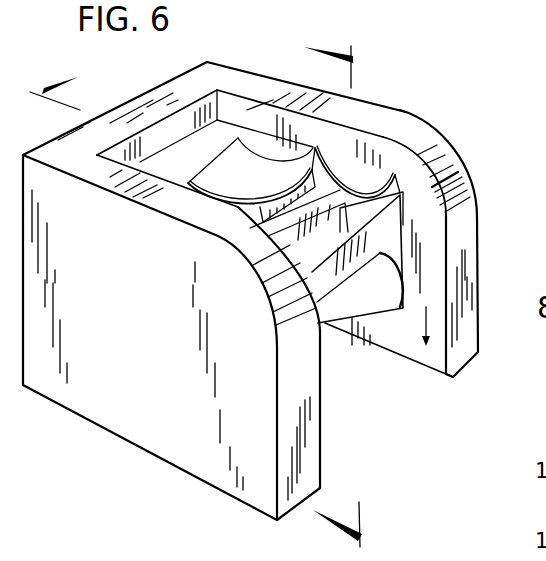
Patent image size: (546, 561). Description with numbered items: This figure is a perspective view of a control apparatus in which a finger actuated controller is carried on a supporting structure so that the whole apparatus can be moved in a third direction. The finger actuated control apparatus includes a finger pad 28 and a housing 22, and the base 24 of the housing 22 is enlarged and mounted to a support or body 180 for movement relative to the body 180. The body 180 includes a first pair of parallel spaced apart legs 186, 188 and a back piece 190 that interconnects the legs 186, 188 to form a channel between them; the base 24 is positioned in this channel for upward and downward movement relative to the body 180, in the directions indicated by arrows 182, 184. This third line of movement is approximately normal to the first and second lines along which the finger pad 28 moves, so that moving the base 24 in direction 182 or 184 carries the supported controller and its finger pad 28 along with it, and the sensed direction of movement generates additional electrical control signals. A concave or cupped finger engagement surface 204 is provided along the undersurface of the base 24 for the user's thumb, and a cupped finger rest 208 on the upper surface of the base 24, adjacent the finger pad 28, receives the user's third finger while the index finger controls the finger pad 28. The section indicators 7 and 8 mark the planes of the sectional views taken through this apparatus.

The body 180 is at (86, 429).
The back piece 190 is at (148, 97).
The arrow 182 is at (425, 214).
The arrow 184 is at (426, 322).
The leg 186 is at (323, 443).
The leg 188 is at (481, 343).
The housing 22 is at (290, 235).
The base 24 is at (313, 273).
The finger engagement surface 204 is at (345, 305).
The finger pad 28 is at (250, 160).
The finger rest 208 is at (360, 188).
The section line 7 is at (341, 297).
The section line 8 is at (55, 98).